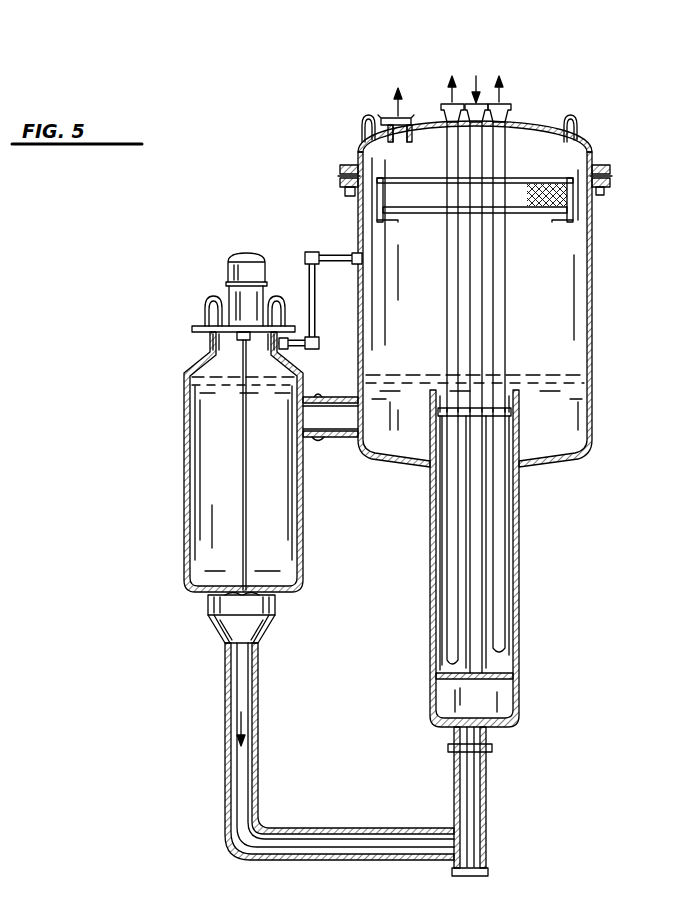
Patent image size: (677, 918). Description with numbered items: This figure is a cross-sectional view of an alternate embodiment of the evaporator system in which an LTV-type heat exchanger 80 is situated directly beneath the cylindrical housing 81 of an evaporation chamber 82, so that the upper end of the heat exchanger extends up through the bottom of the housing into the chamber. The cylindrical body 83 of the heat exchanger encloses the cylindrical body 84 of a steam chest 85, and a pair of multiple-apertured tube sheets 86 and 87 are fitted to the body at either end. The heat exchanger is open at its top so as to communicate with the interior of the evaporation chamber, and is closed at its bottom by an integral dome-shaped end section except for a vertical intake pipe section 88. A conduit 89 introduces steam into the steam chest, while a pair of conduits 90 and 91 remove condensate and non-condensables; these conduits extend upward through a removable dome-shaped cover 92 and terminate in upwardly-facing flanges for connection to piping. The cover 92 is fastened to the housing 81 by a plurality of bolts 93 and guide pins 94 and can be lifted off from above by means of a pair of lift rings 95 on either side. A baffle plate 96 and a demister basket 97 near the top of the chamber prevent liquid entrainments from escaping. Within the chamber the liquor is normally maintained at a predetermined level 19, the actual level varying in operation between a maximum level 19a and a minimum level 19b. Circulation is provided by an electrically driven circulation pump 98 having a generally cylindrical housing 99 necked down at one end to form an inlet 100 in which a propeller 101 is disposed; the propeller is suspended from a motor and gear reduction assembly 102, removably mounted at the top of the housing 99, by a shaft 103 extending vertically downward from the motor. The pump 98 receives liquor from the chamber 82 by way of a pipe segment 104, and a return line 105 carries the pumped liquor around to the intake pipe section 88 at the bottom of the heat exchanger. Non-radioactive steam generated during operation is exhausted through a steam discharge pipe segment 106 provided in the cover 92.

The predetermined level 19 is at (514, 376).
The maximum level 19a is at (566, 370).
The minimum level 19b is at (573, 385).
The LTV-type heat exchanger 80 is at (503, 633).
The cylindrical housing 81 is at (590, 312).
The evaporation chamber 82 is at (437, 318).
The cylindrical body 83 is at (518, 516).
The cylindrical body 84 is at (502, 626).
The steam chest 85 is at (478, 567).
The tube sheet 86 is at (510, 406).
The tube sheet 87 is at (497, 706).
The vertical intake pipe section 88 is at (488, 748).
The conduit 89 is at (478, 278).
The conduit 90 is at (450, 272).
The conduit 91 is at (503, 252).
The dome-shaped cover 92 is at (567, 153).
The bolts 93 is at (345, 167).
The guide pins 94 is at (608, 168).
The lift rings 95 is at (366, 116).
The baffle plate 96 is at (375, 200).
The demister basket 97 is at (563, 193).
The circulation pump 98 is at (214, 451).
The cylindrical housing 99 is at (185, 555).
The inlet 100 is at (225, 612).
The propeller 101 is at (213, 605).
The motor and gear reduction assembly 102 is at (237, 312).
The shaft 103 is at (243, 463).
The pipe segment 104 is at (332, 410).
The return pipe 105 is at (346, 846).
The steam discharge pipe segment 106 is at (400, 116).